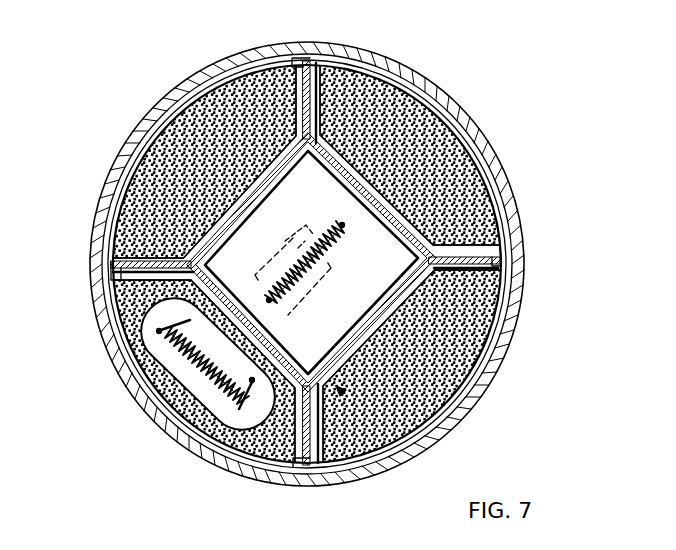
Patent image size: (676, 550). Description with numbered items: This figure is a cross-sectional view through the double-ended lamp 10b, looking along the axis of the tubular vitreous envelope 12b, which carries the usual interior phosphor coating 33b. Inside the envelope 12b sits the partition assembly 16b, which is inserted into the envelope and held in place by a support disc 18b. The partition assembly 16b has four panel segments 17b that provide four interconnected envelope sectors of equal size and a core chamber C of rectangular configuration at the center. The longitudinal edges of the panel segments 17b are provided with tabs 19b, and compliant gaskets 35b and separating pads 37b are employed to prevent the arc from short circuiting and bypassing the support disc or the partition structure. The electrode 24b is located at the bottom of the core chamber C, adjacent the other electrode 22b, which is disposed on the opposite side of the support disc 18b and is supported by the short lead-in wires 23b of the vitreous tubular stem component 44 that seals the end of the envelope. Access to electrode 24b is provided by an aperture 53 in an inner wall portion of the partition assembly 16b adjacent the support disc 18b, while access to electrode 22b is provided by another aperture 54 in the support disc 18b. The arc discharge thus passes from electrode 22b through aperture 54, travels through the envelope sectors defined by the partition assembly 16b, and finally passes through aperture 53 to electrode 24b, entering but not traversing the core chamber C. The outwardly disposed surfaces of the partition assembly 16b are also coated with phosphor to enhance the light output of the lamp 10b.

The lamp 10b is at (618, 194).
The tubular vitreous envelope 12b is at (335, 42).
The partition assembly 16b is at (333, 383).
The panel segments 17b is at (318, 108).
The support disc 18b is at (150, 187).
The tabs 19b is at (294, 50).
The electrode 22b is at (148, 378).
The short lead-in wires 23b is at (247, 284).
The electrode 24b is at (316, 257).
The interior phosphor coating 33b is at (455, 116).
The compliant gasket 35b is at (405, 148).
The separating pad 37b is at (468, 263).
The vitreous tubular stem component 44 is at (306, 227).
The aperture 53 is at (350, 338).
The aperture 54 is at (232, 400).
The core chamber C is at (265, 207).